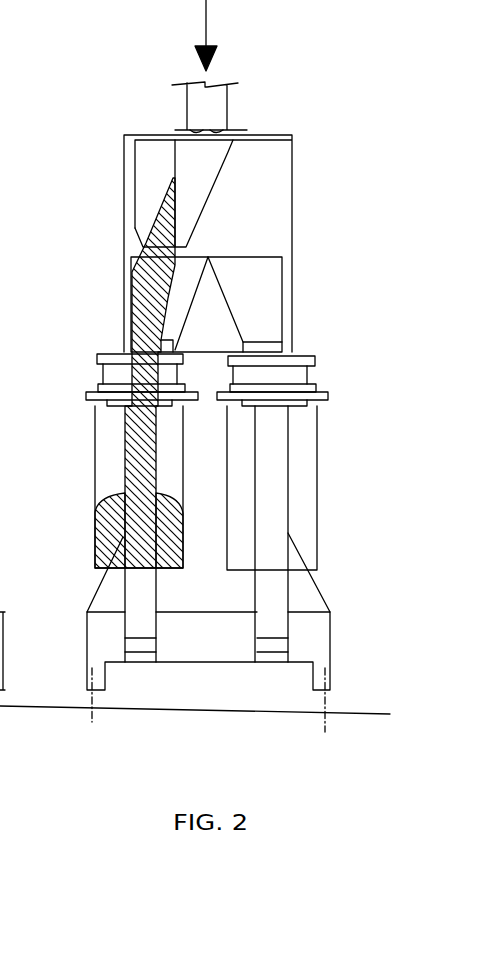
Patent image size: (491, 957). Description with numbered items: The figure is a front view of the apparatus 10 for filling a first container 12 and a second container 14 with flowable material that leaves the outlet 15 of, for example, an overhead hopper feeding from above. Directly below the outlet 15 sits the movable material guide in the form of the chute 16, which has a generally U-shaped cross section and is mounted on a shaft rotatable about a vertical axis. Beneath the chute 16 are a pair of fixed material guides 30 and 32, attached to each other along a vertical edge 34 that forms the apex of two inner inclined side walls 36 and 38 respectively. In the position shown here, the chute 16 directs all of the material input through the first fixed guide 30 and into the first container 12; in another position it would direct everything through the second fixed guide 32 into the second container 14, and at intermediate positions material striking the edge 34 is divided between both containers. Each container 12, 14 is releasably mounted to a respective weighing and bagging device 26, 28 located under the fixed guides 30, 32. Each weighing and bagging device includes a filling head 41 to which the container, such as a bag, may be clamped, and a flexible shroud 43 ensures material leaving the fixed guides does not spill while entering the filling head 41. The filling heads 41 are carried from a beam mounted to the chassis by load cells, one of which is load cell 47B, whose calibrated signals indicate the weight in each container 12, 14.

The apparatus 10 is at (348, 136).
The first container 12 is at (107, 482).
The second container 14 is at (307, 527).
The outlet 15 is at (210, 105).
The chute 16 is at (142, 173).
The weighing and bagging device 26 is at (110, 373).
The weighing and bagging device 28 is at (297, 378).
The first fixed material guide 30 is at (165, 318).
The second fixed material guide 32 is at (270, 330).
The vertical edge 34 is at (212, 253).
The inner inclined side wall 36 is at (196, 283).
The inner inclined side wall 38 is at (223, 292).
The filling head 41 is at (110, 405).
The flexible shroud 43 is at (100, 356).
The load cell 47B is at (138, 645).